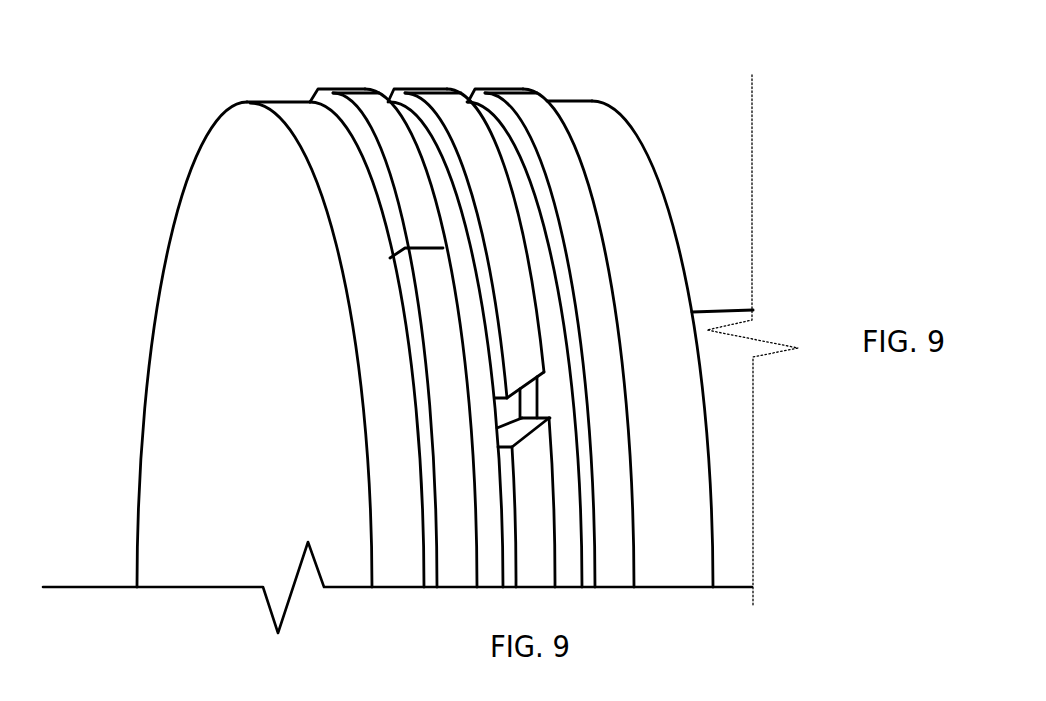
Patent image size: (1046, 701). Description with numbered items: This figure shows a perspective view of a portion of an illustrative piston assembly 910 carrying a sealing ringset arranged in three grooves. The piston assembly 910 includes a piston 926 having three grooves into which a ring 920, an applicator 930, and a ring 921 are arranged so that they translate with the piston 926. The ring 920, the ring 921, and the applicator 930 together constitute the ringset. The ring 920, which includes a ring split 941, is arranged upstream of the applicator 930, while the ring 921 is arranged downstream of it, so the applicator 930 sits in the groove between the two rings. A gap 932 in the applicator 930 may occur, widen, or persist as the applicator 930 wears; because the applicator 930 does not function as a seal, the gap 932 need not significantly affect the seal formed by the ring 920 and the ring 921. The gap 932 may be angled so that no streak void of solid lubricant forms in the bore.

The piston assembly 910 is at (80, 184).
The piston 926 is at (188, 351).
The ring 920 is at (345, 88).
The applicator 930 is at (433, 88).
The ring 921 is at (522, 88).
The ring split 941 is at (367, 253).
The gap 932 is at (556, 392).